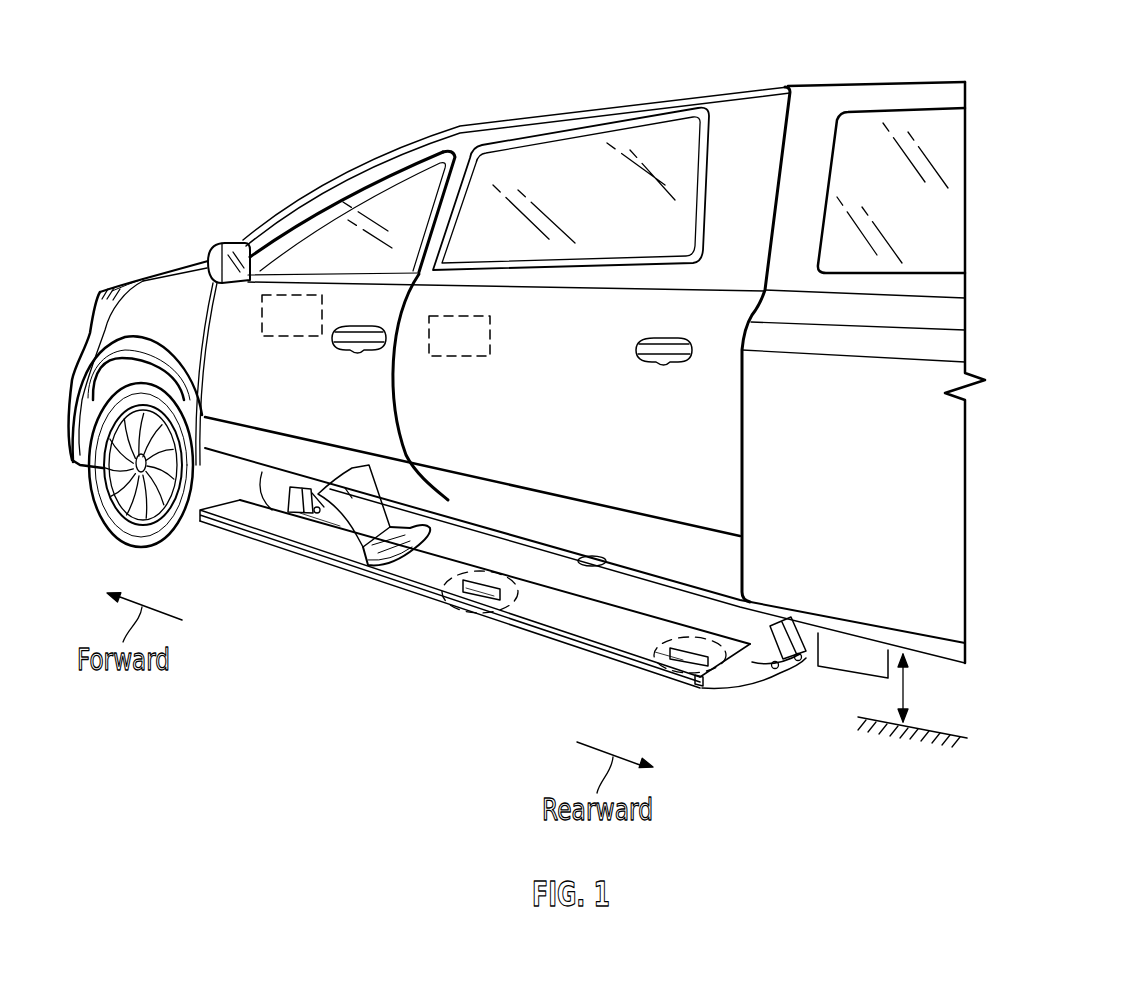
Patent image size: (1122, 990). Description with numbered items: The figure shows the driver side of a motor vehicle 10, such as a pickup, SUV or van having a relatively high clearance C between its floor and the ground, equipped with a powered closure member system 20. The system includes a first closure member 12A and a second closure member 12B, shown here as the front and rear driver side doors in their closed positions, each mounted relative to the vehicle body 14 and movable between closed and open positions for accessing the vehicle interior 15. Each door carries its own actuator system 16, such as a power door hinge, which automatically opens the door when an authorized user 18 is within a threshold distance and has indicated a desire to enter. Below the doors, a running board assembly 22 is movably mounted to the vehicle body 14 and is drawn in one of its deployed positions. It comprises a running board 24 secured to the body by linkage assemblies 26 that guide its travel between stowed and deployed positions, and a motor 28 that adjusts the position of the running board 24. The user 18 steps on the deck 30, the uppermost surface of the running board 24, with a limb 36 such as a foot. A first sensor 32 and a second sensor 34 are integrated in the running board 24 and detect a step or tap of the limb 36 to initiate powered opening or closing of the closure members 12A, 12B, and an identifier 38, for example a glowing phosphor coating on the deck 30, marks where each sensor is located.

The motor vehicle 10 is at (744, 62).
The first closure member 12A is at (373, 300).
The second closure member 12B is at (555, 318).
The vehicle body 14 is at (810, 137).
The vehicle interior 15 is at (385, 178).
The actuator system 16 is at (288, 300).
The authorized user 18 is at (395, 518).
The powered closure member system 20 is at (278, 168).
The running board assembly 22 is at (246, 540).
The running board 24 is at (332, 553).
The linkage assembly 26 is at (300, 486).
The motor 28 is at (860, 652).
The deck 30 is at (338, 541).
The first sensor 32 is at (470, 587).
The second sensor 34 is at (686, 657).
The limb 36 is at (425, 532).
The identifier 38 is at (486, 608).
The clearance C is at (906, 680).